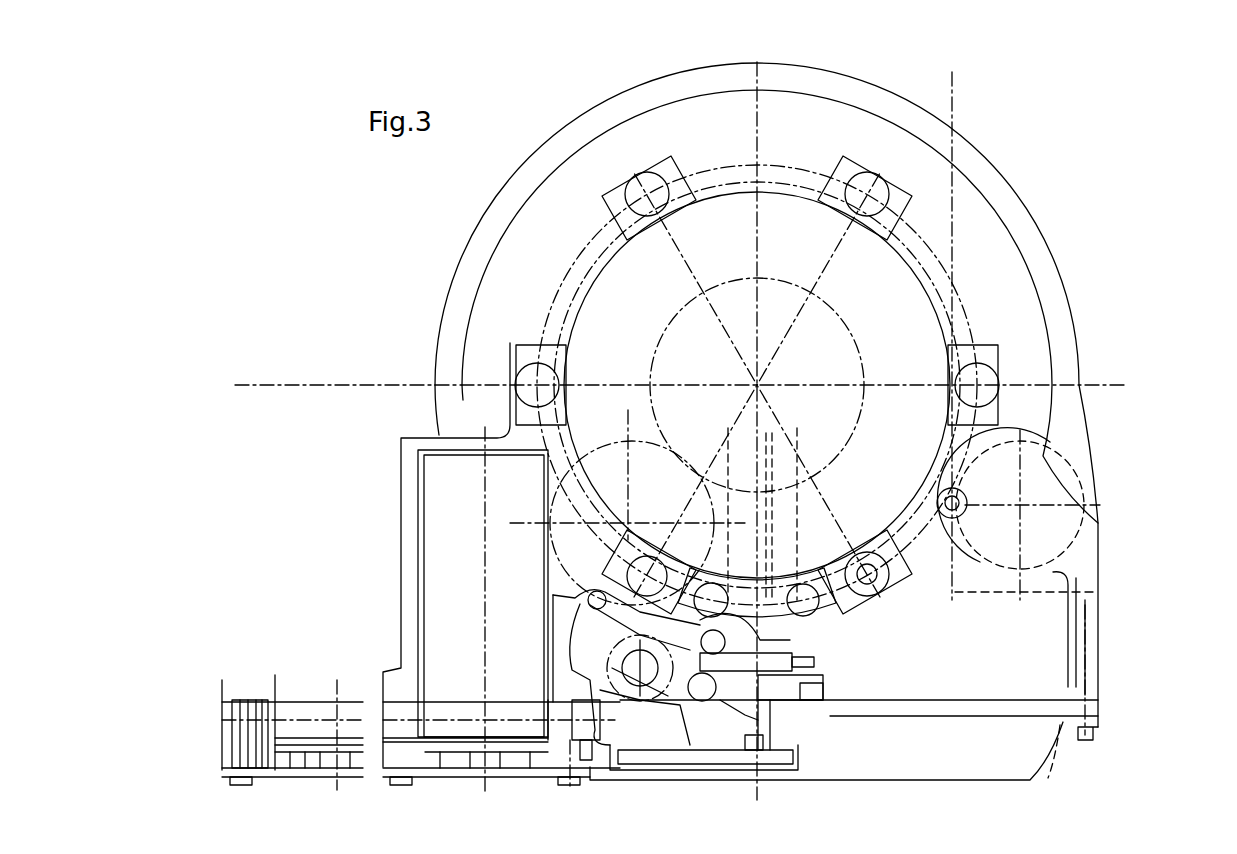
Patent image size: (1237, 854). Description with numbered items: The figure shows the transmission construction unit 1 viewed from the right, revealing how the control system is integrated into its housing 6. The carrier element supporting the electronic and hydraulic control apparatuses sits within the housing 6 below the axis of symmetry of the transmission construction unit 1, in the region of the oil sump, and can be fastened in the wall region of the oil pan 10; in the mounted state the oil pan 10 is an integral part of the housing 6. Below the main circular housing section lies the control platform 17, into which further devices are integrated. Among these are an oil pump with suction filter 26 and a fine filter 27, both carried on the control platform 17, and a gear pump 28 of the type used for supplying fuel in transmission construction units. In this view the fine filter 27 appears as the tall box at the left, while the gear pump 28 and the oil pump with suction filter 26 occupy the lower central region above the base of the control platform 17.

The transmission construction unit 1 is at (1067, 228).
The housing 6 is at (1088, 613).
The oil pan 10 is at (1022, 759).
The control platform 17 is at (1080, 704).
The oil pump with suction filter 26 is at (800, 753).
The fine filter 27 is at (476, 567).
The gear pump 28 is at (815, 641).